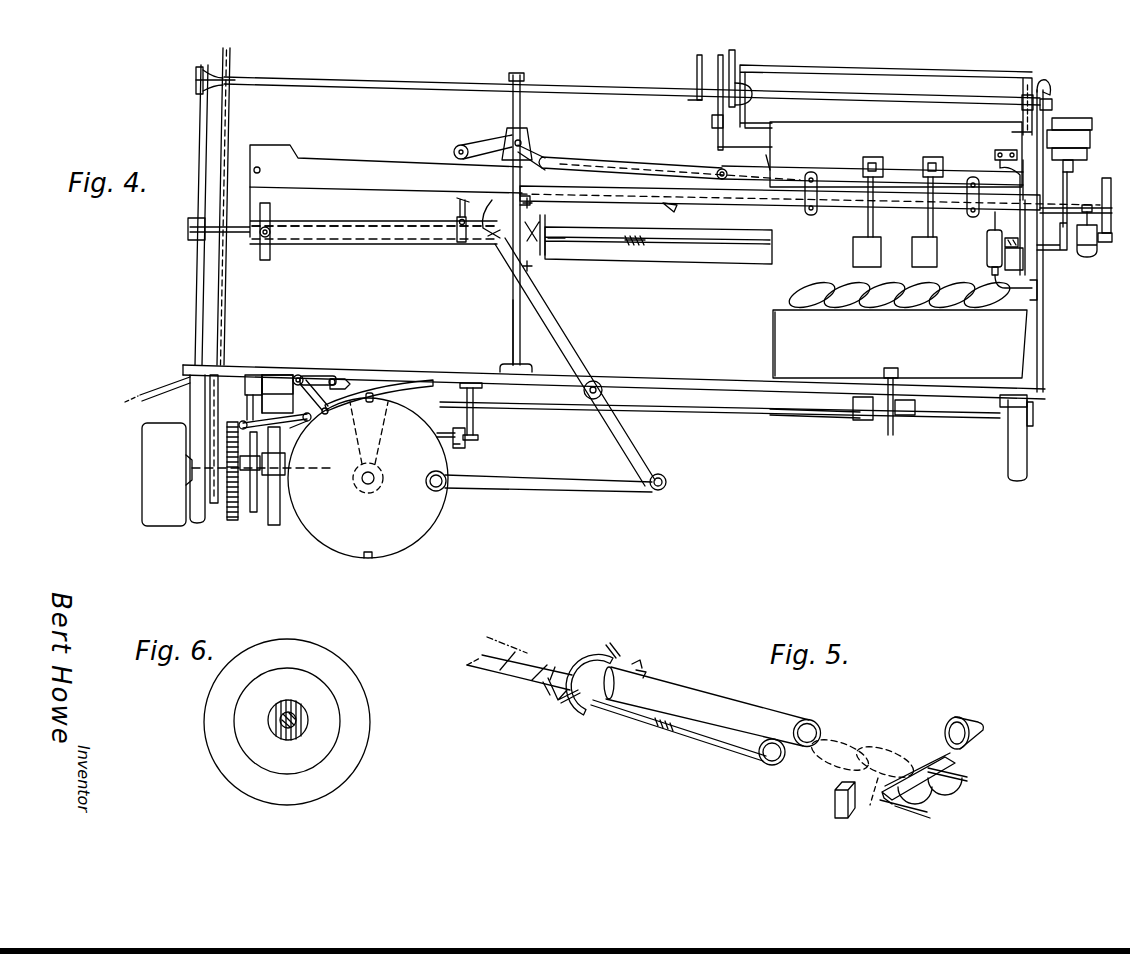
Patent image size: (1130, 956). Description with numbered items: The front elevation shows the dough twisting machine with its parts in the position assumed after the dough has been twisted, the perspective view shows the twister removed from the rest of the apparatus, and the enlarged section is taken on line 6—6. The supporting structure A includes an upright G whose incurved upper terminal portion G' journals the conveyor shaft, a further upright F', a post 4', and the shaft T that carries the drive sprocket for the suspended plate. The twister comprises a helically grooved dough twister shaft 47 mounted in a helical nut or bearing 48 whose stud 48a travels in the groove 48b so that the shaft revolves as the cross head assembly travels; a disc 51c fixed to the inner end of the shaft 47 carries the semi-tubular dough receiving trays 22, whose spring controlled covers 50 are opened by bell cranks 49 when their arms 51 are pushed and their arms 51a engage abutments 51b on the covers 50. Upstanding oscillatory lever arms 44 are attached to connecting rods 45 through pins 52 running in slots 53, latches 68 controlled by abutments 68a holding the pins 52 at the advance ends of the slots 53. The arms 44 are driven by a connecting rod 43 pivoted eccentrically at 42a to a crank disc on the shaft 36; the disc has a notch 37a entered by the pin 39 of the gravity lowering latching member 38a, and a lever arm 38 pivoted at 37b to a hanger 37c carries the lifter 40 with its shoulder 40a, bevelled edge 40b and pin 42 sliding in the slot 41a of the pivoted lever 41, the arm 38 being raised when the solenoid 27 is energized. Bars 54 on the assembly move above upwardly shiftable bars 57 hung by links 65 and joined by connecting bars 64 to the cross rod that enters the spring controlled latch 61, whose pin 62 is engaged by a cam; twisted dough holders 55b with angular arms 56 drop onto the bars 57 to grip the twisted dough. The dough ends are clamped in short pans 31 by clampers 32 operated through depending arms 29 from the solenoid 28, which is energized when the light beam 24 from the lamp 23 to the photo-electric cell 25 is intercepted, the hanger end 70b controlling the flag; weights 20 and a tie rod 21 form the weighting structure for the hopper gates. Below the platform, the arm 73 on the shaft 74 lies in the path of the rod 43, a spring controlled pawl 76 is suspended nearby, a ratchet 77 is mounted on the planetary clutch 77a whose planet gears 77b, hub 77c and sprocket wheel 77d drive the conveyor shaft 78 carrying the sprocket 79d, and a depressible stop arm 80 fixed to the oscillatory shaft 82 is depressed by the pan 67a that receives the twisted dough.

In FIG. 4, the shaft T is at (408, 84).
In FIG. 4, the incurved upper terminal portion G' is at (358, 210).
In FIG. 4, the upright G is at (1057, 236).
In FIG. 4, the frame beam F' is at (601, 404).
In FIG. 4, the supporting structure A is at (1027, 452).
In FIG. 4, the bars 54 is at (385, 158).
In FIG. 4, the dough twister shaft 47 is at (402, 250).
In FIG. 5, the dough twister shaft 47 is at (538, 663).
In FIG. 4, the connecting rods 45 is at (350, 246).
In FIG. 4, the pins 52 is at (466, 246).
In FIG. 4, the slots 53 is at (488, 250).
In FIG. 4, the latches 68 is at (460, 205).
In FIG. 4, the abutments 68a is at (677, 206).
In FIG. 4, the bar or pin 62 is at (462, 145).
In FIG. 4, the latch 61 is at (528, 150).
In FIG. 4, the connecting bars 64 is at (603, 163).
In FIG. 4, the upwardly shiftable bars 57 is at (895, 175).
In FIG. 4, the links 65 is at (815, 180).
In FIG. 4, the twisted dough holders 55b is at (878, 232).
In FIG. 4, the arm 56 is at (912, 250).
In FIG. 4, the dough receiving trays 22 is at (720, 262).
In FIG. 4, the arms 51 is at (556, 225).
In FIG. 5, the arms 51 is at (546, 685).
In FIG. 4, the abutments 51b is at (566, 238).
In FIG. 5, the abutments 51b is at (646, 674).
In FIG. 4, the section line 6 is at (534, 237).
In FIG. 4, the post 4' is at (525, 332).
In FIG. 4, the lever arms 44 is at (560, 322).
In FIG. 4, the shaft 36 is at (374, 480).
In FIG. 4, the notch 37a is at (368, 560).
In FIG. 4, the pin 39 is at (370, 402).
In FIG. 4, the connecting rod 43 is at (538, 483).
In FIG. 4, the pivot 37b is at (188, 395).
In FIG. 4, the ratchet 77 is at (232, 522).
In FIG. 4, the hub 77c is at (214, 505).
In FIG. 4, the planet gears 77b is at (258, 514).
In FIG. 4, the planetary clutch 77a is at (251, 515).
In FIG. 4, the sprocket wheel 77d is at (282, 502).
In FIG. 4, the lifter element 40 is at (277, 394).
In FIG. 4, the pin 42 is at (277, 384).
In FIG. 4, the solenoid 27 is at (278, 374).
In FIG. 4, the hanger 37c is at (255, 374).
In FIG. 4, the lever 41 is at (330, 375).
In FIG. 4, the slot 41a is at (300, 375).
In FIG. 4, the shoulder 40a is at (345, 378).
In FIG. 4, the bevelled edge 40b is at (327, 413).
In FIG. 4, the latching member 38a is at (410, 382).
In FIG. 4, the stop 42a is at (300, 420).
In FIG. 4, the lever arm 38 is at (290, 426).
In FIG. 4, the shaft 74 is at (455, 432).
In FIG. 4, the arm 73 is at (467, 448).
In FIG. 4, the pawl 76 is at (765, 415).
In FIG. 4, the oscillatory shaft 82 is at (800, 420).
In FIG. 4, the stop arm 80 is at (858, 417).
In FIG. 4, the sprocket 79d is at (895, 430).
In FIG. 4, the pan 67a is at (776, 345).
In FIG. 4, the hanger end 70b is at (1002, 150).
In FIG. 4, the conveyor shaft 78 is at (1026, 192).
In FIG. 4, the clampers 32 is at (1010, 237).
In FIG. 5, the clampers 32 is at (918, 760).
In FIG. 4, the pans 31 is at (1024, 264).
In FIG. 5, the pans 31 is at (945, 795).
In FIG. 4, the solenoid 28 is at (1090, 122).
In FIG. 4, the depending arms 29 is at (1068, 182).
In FIG. 4, the tie rod 21 is at (1102, 200).
In FIG. 4, the weights 20 is at (1085, 256).
In FIG. 6, the helical nut or bearing 48 is at (335, 705).
In FIG. 6, the stud 48a is at (290, 702).
In FIG. 6, the groove 48b is at (298, 708).
In FIG. 5, the groove 48b is at (518, 655).
In FIG. 5, the disc 51c is at (585, 655).
In FIG. 5, the bell cranks 49 is at (621, 648).
In FIG. 5, the arms 51a is at (640, 662).
In FIG. 5, the covers 50 is at (684, 690).
In FIG. 5, the electric lamp 23 is at (982, 726).
In FIG. 5, the light beam 24 is at (873, 805).
In FIG. 5, the photo-electric cell 25 is at (837, 818).